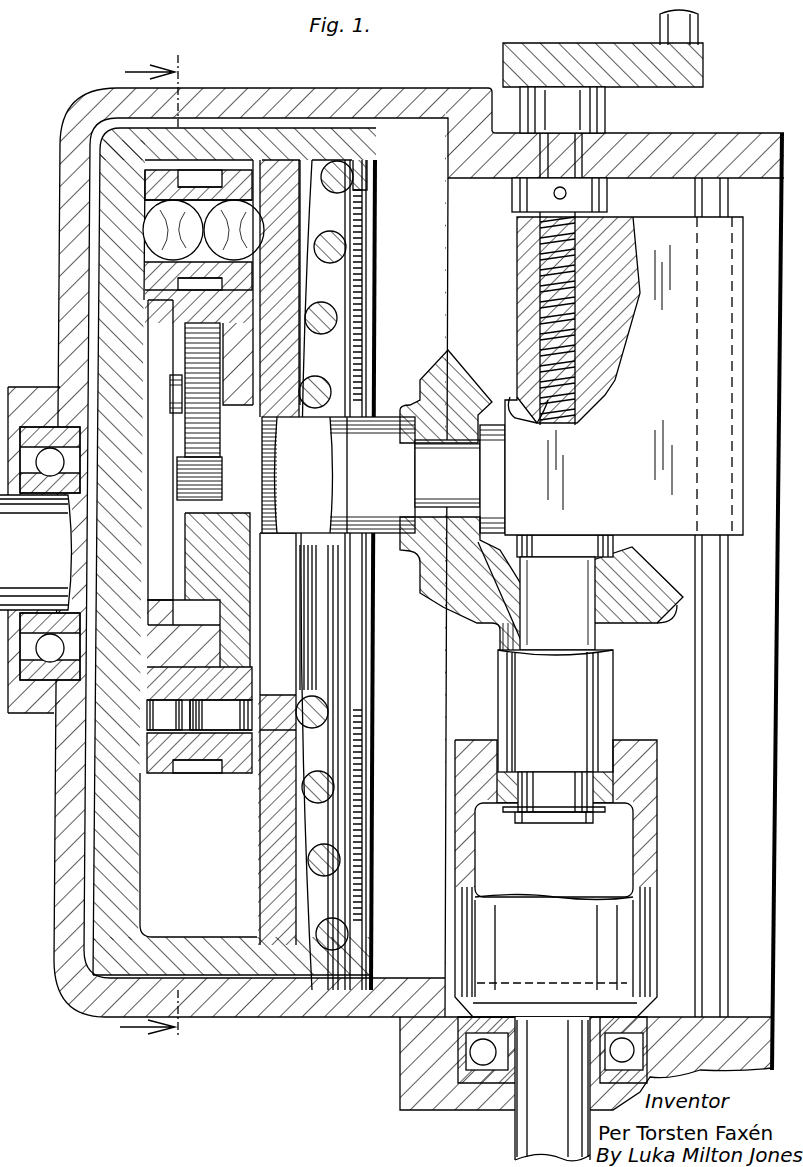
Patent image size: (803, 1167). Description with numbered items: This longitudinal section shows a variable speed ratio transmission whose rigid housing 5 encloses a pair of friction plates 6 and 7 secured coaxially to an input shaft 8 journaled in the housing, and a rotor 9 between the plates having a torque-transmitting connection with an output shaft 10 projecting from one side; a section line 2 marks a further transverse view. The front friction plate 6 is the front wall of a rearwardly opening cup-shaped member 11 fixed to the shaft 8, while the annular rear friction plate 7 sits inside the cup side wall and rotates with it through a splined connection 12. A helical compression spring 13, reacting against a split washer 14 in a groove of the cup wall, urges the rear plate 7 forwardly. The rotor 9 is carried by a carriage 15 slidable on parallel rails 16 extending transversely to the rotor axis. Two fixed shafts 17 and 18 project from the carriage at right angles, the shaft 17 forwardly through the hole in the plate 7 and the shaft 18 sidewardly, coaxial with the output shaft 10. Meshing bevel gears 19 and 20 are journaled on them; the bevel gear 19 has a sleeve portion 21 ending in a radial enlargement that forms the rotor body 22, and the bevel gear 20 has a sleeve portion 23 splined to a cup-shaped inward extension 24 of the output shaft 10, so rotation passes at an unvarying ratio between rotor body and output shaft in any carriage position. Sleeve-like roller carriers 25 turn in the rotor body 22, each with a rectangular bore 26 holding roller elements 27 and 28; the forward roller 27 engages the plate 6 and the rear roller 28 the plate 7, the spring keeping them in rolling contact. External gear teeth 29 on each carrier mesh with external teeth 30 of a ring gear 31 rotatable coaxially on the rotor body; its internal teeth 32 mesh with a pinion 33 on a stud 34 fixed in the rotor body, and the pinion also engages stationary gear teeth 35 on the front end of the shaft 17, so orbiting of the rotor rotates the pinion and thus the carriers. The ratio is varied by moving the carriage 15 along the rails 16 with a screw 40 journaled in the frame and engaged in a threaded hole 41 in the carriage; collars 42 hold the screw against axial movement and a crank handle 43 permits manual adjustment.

The section line 2- 2 is at (162, 550).
The housing 5 is at (271, 88).
The friction plate 6 is at (145, 338).
The friction plate 7 is at (260, 350).
The shaft 8 is at (40, 553).
The rotor 9 is at (250, 160).
The shaft 10 is at (552, 1092).
The cup-shaped member 11 is at (245, 128).
The splined connection 12 is at (312, 160).
The helical compression spring 13 is at (345, 203).
The split washer 14 is at (377, 178).
The carriage 15 is at (670, 383).
The rails 16 is at (712, 605).
The fixed shaft 17 is at (460, 479).
The fixed shaft 18 is at (558, 592).
The bevel gear 19 is at (458, 385).
The bevel gear 20 is at (460, 603).
The sleeve portion 21 is at (338, 475).
The rotor body 22 is at (240, 567).
The sleeve portion 23 is at (555, 711).
The cup-shaped inward extension 24 is at (455, 822).
The roller carriers 25 is at (153, 197).
The bore 26 is at (160, 253).
The roller element 27 is at (150, 230).
The roller element 28 is at (250, 220).
The external gear teeth 29 is at (193, 182).
The external teeth 30 is at (213, 277).
The ring gear 31 is at (170, 610).
The internal teeth 32 is at (176, 585).
The pinion 33 is at (192, 357).
The stud 34 is at (172, 400).
The stationary gear teeth 35 is at (205, 478).
The screw 40 is at (545, 278).
The threaded hole 41 is at (548, 405).
The collars 42 is at (587, 113).
The crank handle 43 is at (685, 30).